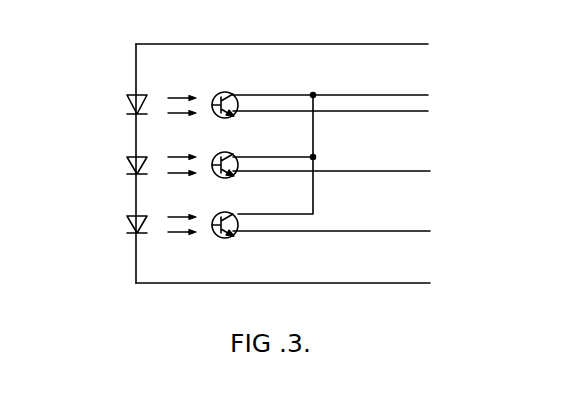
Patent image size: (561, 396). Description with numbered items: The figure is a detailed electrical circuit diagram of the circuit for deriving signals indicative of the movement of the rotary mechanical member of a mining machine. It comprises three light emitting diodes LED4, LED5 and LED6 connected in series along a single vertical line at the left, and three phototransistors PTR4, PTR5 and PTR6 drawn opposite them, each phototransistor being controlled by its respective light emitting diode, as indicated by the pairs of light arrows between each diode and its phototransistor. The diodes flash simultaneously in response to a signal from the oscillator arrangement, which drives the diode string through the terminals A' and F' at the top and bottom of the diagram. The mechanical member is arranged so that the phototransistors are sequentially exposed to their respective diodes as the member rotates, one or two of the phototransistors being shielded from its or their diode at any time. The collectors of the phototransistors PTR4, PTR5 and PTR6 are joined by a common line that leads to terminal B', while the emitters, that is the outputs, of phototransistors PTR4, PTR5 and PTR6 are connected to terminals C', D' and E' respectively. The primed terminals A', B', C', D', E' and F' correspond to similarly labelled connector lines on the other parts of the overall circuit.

The light emitting diode LED4 is at (129, 107).
The light emitting diode LED5 is at (129, 167).
The light emitting diode LED6 is at (129, 227).
The phototransistor PTR4 is at (320, 92).
The phototransistor PTR5 is at (321, 152).
The phototransistor PTR6 is at (321, 212).
The terminal A' is at (443, 40).
The terminal B' is at (443, 88).
The terminal C' is at (443, 113).
The terminal D' is at (445, 167).
The terminal E' is at (445, 224).
The terminal F' is at (445, 275).